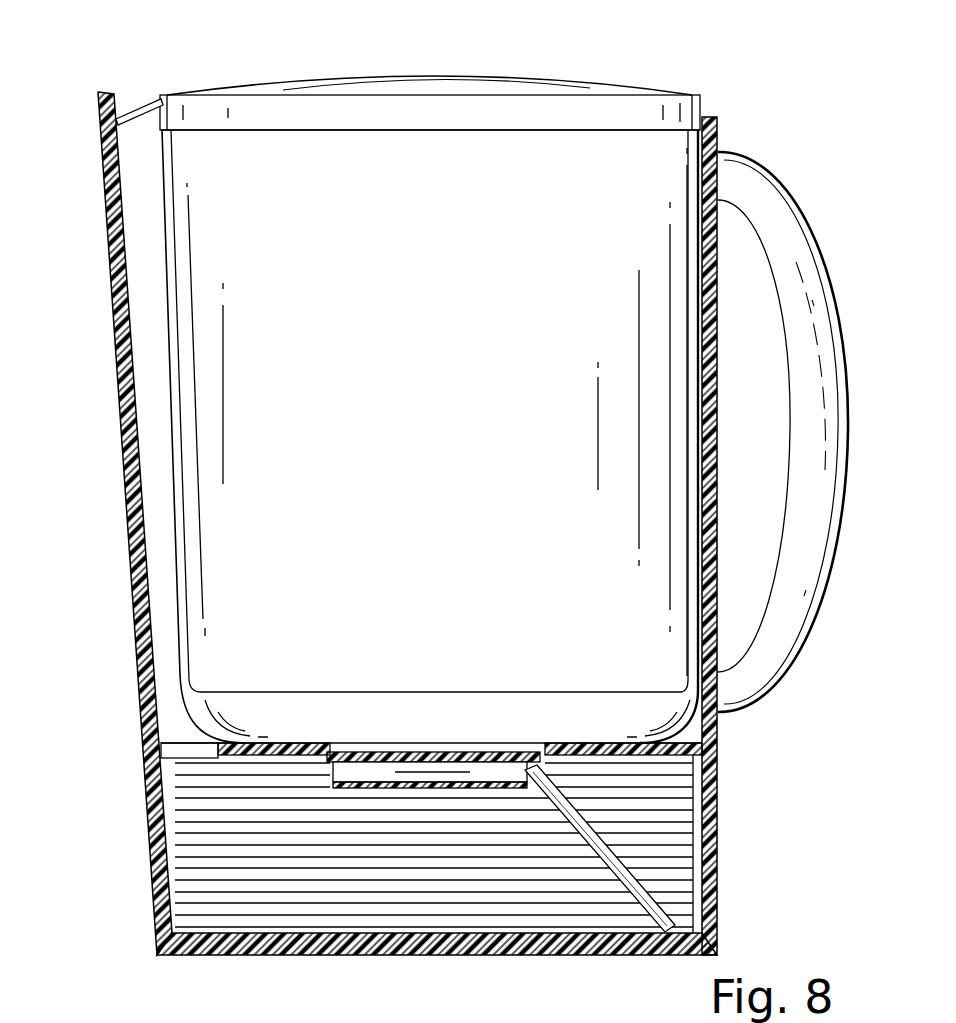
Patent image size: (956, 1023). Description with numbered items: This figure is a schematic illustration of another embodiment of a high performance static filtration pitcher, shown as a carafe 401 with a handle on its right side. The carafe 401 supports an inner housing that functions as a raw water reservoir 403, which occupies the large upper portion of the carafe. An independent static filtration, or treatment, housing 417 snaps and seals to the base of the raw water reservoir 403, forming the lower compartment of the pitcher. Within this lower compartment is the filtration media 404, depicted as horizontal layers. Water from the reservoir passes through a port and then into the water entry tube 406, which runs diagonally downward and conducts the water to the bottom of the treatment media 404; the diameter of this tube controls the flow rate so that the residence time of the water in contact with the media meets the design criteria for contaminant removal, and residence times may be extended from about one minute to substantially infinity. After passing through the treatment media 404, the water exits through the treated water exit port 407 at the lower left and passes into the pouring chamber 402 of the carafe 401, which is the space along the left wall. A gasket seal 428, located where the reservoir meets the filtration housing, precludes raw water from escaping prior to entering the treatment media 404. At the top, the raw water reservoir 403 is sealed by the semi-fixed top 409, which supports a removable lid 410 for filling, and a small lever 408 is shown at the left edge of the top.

The carafe 401 is at (718, 352).
The pouring chamber 402 is at (145, 340).
The raw water reservoir 403 is at (650, 198).
The filtration media 404 is at (670, 800).
The water entry tube 406 is at (648, 895).
The treated water exit port 407 is at (183, 753).
The lever 408 is at (133, 102).
The semi-fixed top 409 is at (197, 117).
The removable lid 410 is at (598, 83).
The static filtration housing 417 is at (167, 913).
The gasket seal 428 is at (327, 753).